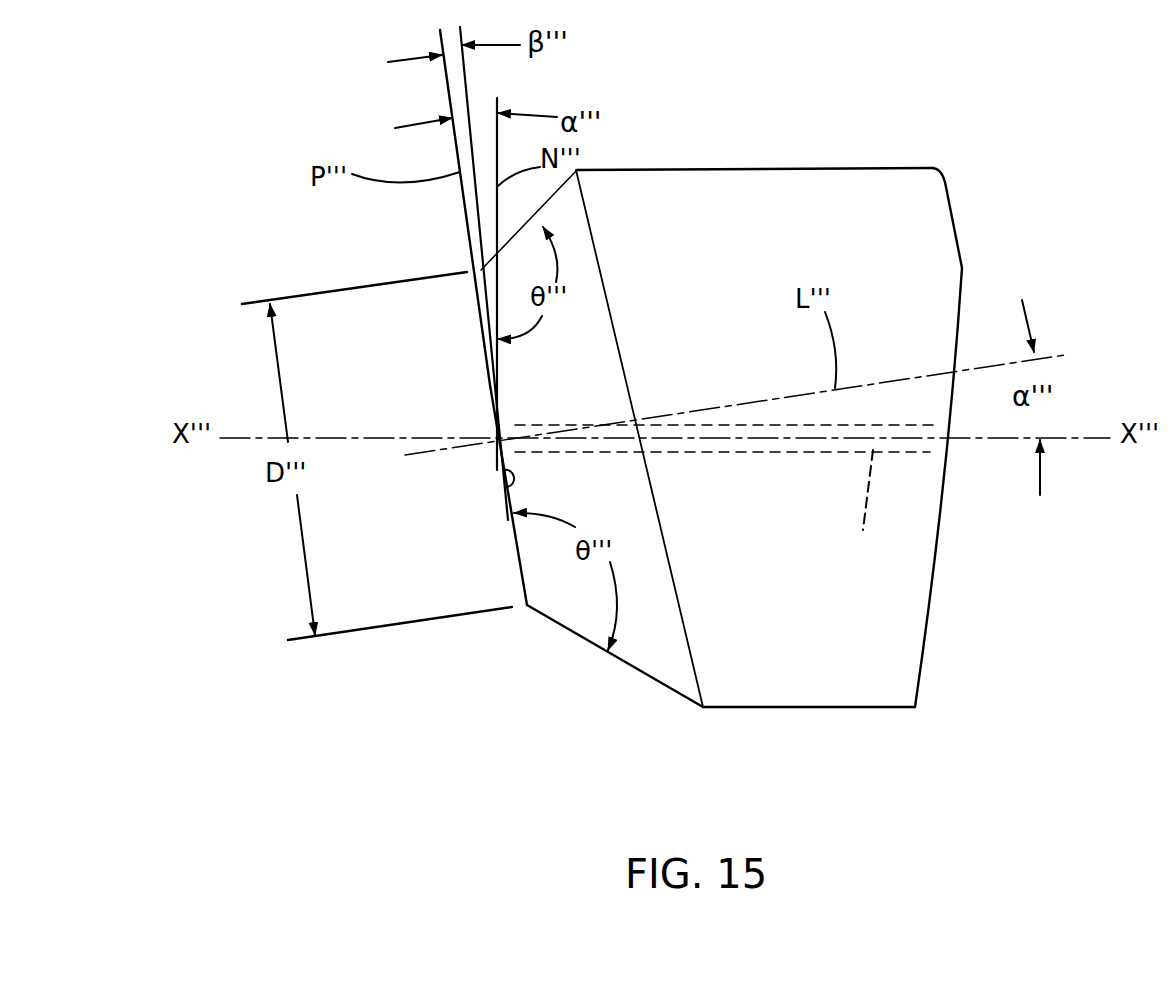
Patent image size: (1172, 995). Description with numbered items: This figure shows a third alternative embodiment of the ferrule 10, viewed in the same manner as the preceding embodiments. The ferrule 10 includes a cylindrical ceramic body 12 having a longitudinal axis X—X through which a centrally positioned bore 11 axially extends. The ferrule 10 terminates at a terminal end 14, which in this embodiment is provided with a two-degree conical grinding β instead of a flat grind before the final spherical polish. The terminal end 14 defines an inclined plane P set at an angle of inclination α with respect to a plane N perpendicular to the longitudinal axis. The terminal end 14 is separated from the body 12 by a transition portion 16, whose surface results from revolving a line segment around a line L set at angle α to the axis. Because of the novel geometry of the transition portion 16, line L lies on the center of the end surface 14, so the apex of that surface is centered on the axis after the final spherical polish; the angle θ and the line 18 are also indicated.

The ferrule 10 is at (885, 167).
The bore 11 is at (867, 507).
The cylindrical ceramic body 12 is at (918, 222).
The terminal end 14 is at (507, 492).
The transition portion 16 is at (647, 577).
The rake face line 18 is at (600, 278).